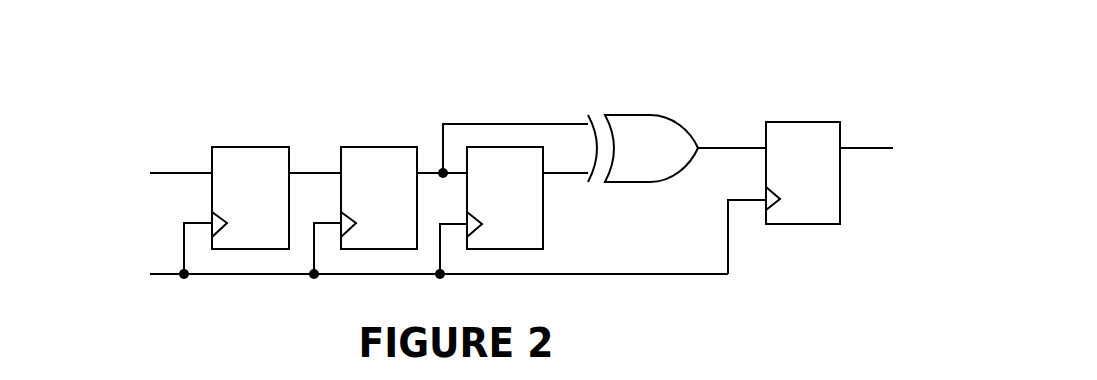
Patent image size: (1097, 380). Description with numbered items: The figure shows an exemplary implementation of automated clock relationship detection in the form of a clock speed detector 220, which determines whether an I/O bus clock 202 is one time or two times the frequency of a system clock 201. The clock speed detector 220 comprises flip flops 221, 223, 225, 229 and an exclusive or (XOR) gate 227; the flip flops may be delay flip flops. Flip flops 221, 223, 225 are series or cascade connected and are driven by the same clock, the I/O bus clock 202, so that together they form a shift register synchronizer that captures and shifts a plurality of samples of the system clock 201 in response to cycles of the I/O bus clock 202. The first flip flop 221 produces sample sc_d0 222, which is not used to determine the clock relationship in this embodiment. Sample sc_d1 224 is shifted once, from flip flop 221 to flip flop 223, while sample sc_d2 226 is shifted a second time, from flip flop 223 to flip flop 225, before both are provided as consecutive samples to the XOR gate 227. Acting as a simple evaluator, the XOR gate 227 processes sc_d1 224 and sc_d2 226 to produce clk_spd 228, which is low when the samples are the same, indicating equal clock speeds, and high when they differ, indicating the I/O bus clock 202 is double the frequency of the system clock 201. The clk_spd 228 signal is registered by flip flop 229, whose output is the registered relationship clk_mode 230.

The clock speed detector 220 is at (484, 145).
The system clock 201 is at (143, 180).
The I/O bus clock 202 is at (425, 245).
The flip flop 221 is at (232, 204).
The sc_d0 222 is at (315, 170).
The flip flop 223 is at (362, 203).
The sc_d1 224 is at (502, 139).
The flip flop 225 is at (487, 203).
The sc_d2 226 is at (562, 175).
The exclusive or (XOR) gate 227 is at (635, 162).
The clk_spd 228 is at (740, 147).
The flip flop 229 is at (786, 181).
The clk_mode 230 is at (873, 147).